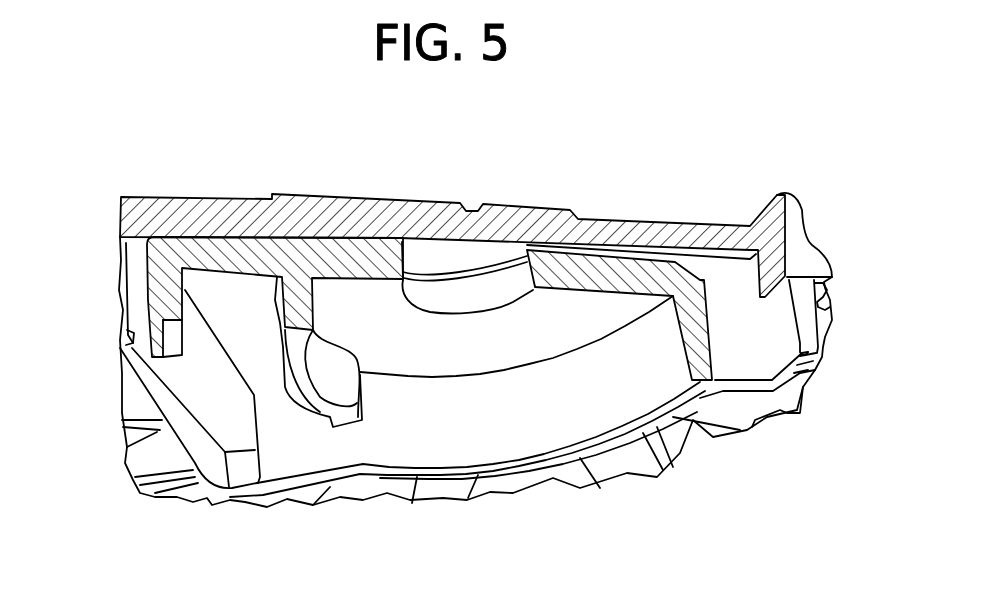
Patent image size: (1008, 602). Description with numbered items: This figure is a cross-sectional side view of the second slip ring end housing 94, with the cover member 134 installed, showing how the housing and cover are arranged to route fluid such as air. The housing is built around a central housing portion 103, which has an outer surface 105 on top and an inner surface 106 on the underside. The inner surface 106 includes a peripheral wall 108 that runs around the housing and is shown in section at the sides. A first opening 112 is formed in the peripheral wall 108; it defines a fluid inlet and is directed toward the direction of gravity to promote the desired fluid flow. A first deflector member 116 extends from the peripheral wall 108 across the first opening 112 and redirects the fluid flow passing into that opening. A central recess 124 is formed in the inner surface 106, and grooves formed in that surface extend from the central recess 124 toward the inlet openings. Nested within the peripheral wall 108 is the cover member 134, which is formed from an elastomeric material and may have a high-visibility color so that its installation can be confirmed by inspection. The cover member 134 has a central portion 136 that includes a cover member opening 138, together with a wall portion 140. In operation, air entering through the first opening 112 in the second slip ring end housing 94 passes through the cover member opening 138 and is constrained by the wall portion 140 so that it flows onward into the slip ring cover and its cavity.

The second slip ring end housing 94 is at (211, 186).
The central housing portion 103 is at (325, 191).
The outer surface 105 is at (617, 218).
The inner surface 106 is at (128, 268).
The peripheral wall 108 is at (685, 430).
The first opening 112 is at (755, 327).
The first deflector member 116 is at (813, 386).
The central recess 124 is at (430, 251).
The cover member 134 is at (126, 306).
The central portion 136 is at (553, 320).
The cover member opening 138 is at (428, 300).
The wall portion 140 is at (153, 290).